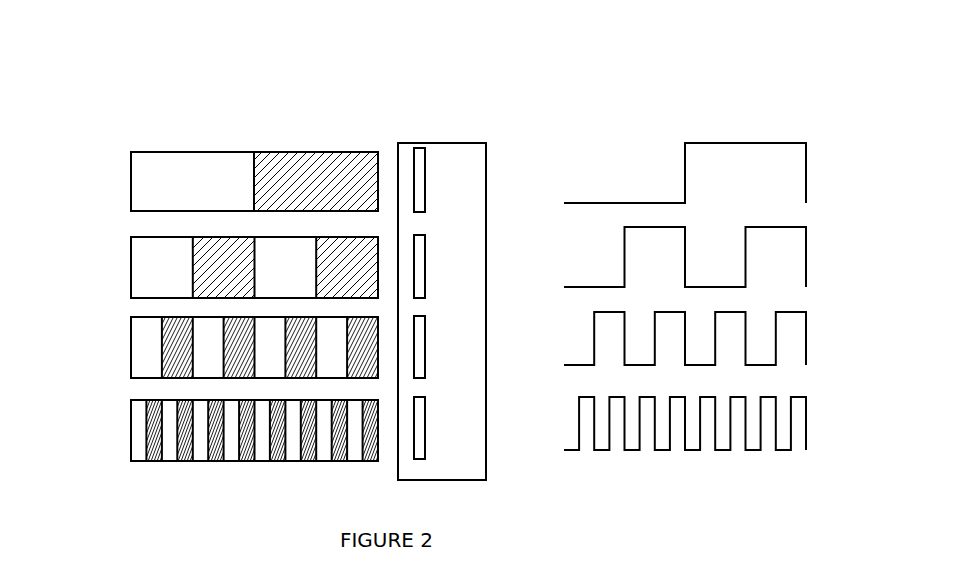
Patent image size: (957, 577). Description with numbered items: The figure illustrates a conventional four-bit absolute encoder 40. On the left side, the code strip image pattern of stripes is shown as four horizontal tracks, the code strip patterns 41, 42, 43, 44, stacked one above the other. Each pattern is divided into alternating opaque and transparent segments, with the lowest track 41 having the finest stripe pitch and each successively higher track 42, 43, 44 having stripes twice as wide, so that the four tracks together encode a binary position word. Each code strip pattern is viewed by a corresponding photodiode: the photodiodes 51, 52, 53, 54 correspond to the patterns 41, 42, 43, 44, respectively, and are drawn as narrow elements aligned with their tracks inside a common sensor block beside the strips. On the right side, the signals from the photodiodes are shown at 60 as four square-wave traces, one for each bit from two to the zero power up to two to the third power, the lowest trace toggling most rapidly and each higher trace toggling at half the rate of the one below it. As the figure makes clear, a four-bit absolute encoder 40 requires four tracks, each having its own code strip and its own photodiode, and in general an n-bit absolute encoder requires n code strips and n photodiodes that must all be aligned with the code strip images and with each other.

The 4-bit absolute encoder 40 is at (79, 97).
The code strip image pattern 41 is at (131, 443).
The code strip image pattern 42 is at (131, 353).
The code strip image pattern 43 is at (131, 287).
The code strip image pattern 44 is at (131, 186).
The photodiode 51 is at (425, 430).
The photodiode 52 is at (425, 345).
The photodiode 53 is at (425, 269).
The photodiode 54 is at (425, 172).
The signals from the photodiodes 60 is at (683, 97).